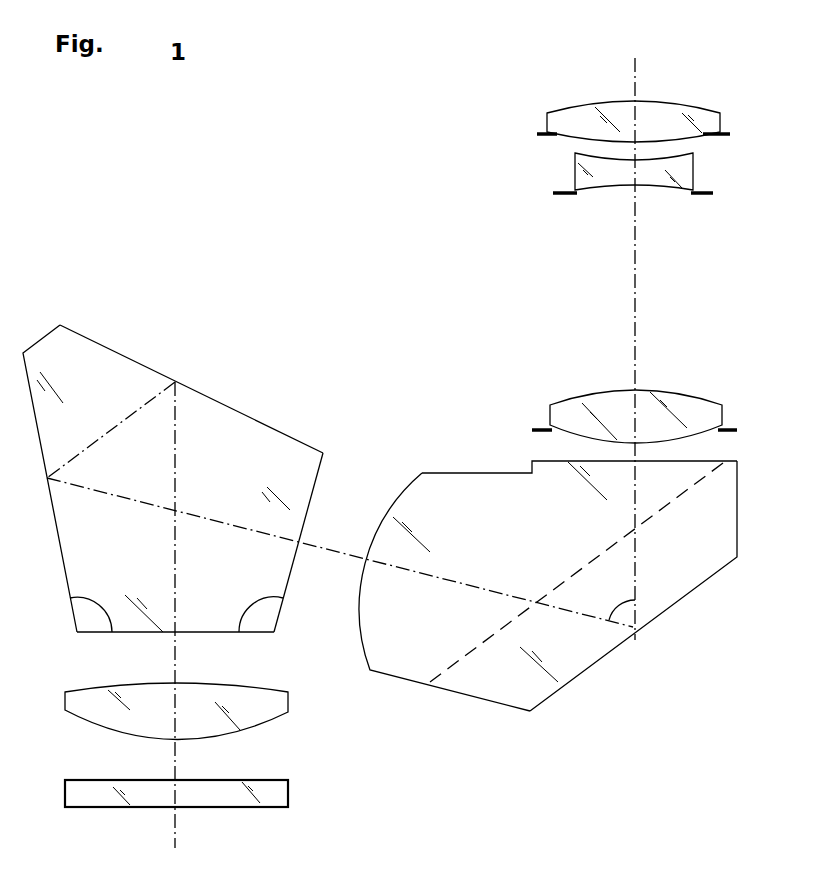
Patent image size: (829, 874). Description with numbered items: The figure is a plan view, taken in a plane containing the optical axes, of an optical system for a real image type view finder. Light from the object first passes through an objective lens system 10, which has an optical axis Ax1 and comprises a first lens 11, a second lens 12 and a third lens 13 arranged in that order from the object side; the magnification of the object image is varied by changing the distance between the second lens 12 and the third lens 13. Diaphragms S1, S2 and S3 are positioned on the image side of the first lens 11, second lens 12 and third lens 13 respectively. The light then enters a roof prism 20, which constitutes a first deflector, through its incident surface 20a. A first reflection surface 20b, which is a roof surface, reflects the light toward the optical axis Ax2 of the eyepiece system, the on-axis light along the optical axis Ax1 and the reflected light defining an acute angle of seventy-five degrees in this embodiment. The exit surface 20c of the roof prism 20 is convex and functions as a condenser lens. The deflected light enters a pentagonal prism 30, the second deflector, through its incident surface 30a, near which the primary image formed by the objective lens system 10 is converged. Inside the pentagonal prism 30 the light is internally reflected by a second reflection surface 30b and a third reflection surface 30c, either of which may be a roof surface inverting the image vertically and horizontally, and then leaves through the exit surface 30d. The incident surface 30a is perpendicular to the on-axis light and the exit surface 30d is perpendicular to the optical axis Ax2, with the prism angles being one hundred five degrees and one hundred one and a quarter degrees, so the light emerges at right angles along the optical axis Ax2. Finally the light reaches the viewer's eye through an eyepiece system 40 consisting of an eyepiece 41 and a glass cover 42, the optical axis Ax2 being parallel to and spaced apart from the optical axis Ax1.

The objective lens system 10 is at (503, 150).
The first lens 11 is at (588, 130).
The second lens 12 is at (620, 186).
The third lens 13 is at (569, 398).
The diaphragm S1 is at (720, 134).
The diaphragm S2 is at (710, 193).
The diaphragm S3 is at (727, 427).
The optical axis Ax1 is at (632, 292).
The roof prism 20 is at (547, 570).
The incident surface of roof prism 20a is at (704, 462).
The first reflection surface 20b is at (685, 578).
The exit surface 20c is at (365, 648).
The pentagonal prism 30 is at (318, 474).
The incident surface 30a is at (316, 487).
The second reflection surface 30b is at (66, 578).
The third reflection surface 30c is at (223, 403).
The exit surface 30d is at (120, 633).
The eyepiece system 40 is at (333, 693).
The eyepiece 41 is at (273, 705).
The glass cover 42 is at (277, 792).
The optical axis Ax2 is at (172, 748).